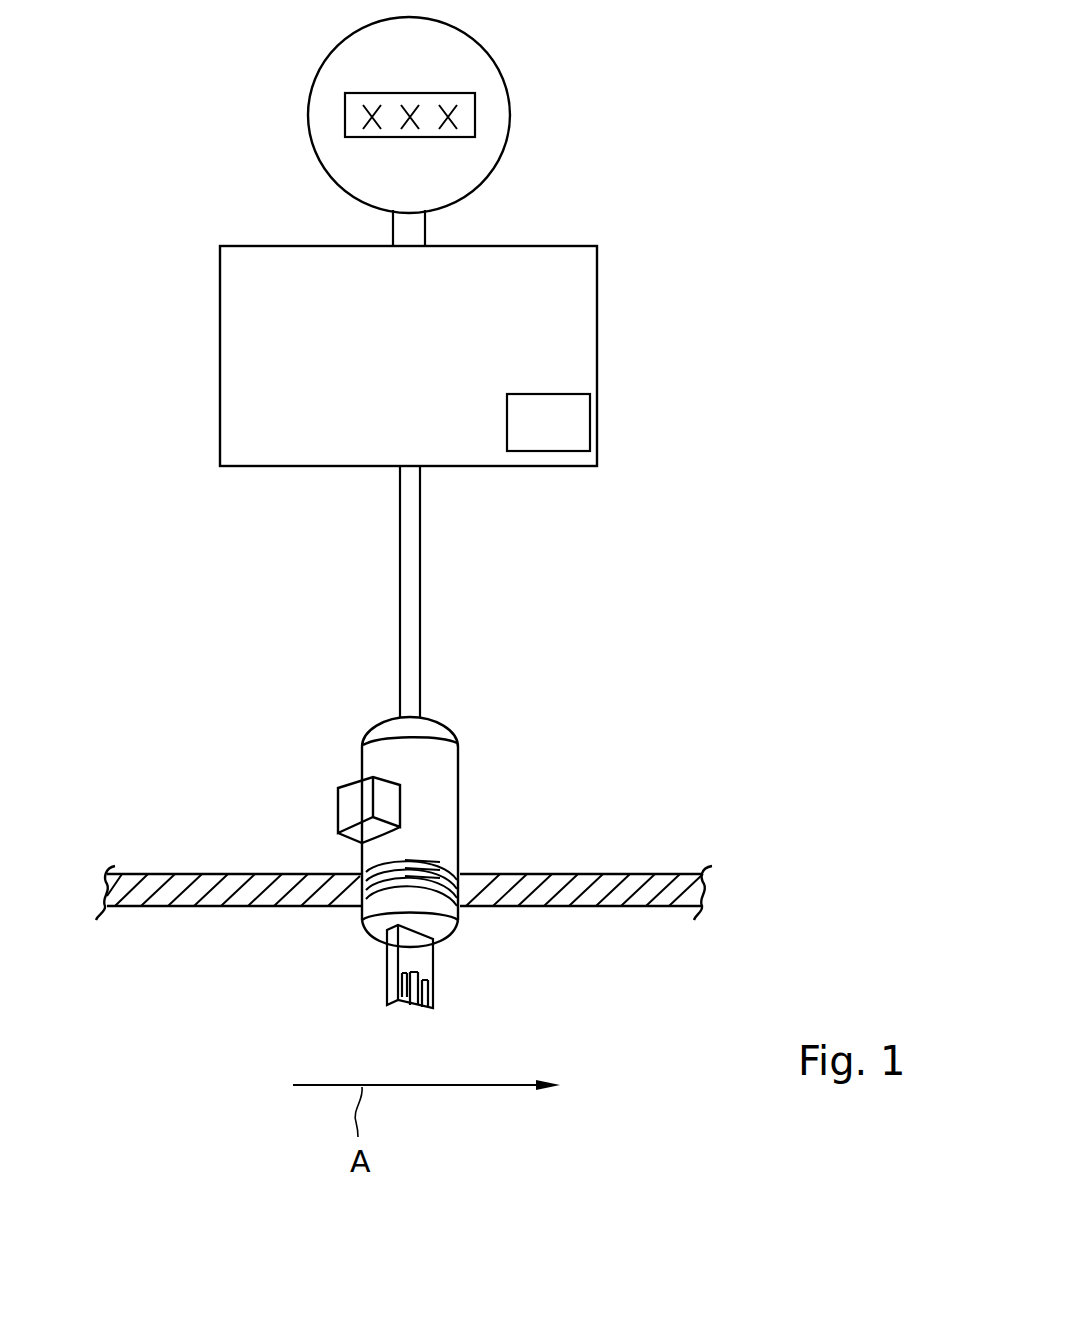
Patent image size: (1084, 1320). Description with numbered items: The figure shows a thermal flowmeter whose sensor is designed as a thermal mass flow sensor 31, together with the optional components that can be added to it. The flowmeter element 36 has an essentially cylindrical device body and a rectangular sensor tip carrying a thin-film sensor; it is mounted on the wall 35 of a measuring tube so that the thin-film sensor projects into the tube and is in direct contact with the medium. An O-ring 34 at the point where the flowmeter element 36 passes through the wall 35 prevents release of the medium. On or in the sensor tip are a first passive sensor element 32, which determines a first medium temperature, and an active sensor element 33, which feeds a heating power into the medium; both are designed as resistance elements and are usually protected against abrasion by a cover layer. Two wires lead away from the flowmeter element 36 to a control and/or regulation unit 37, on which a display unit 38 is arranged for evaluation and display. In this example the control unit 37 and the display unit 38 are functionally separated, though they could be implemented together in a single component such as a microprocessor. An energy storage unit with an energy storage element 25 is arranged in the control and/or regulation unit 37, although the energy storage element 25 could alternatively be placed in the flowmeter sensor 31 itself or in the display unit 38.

The display unit 38 is at (490, 117).
The control and/or regulation unit 37 is at (573, 353).
The energy storage element 25 is at (555, 427).
The thermal mass flow sensor 31 is at (533, 755).
The O-ring 34 is at (460, 888).
The wall 35 is at (667, 878).
The first passive sensor element 32 is at (397, 985).
The flowmeter element 36 is at (417, 977).
The active sensor element 33 is at (430, 997).